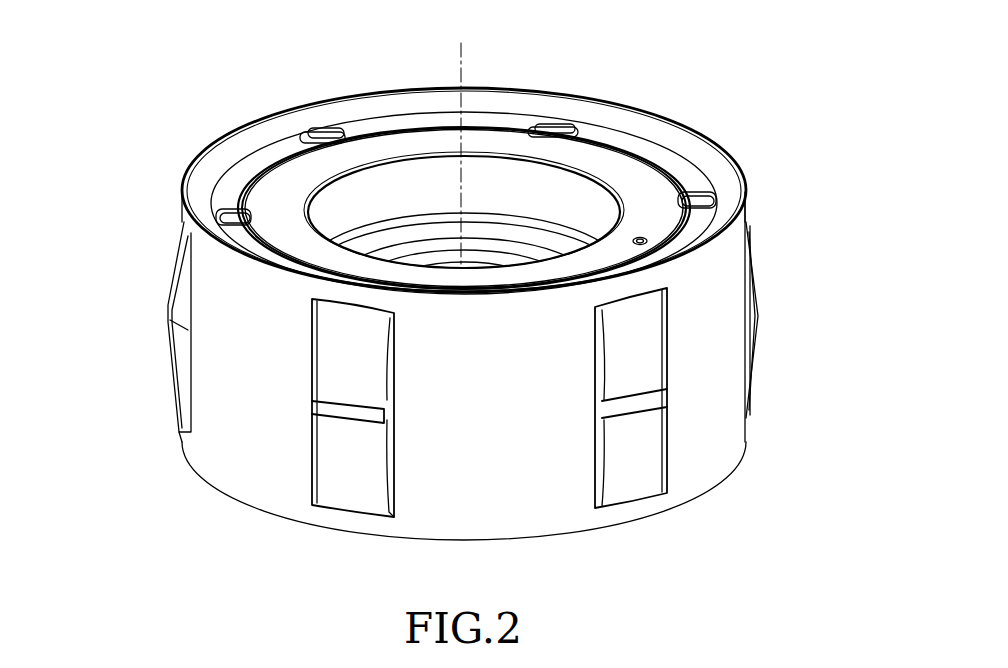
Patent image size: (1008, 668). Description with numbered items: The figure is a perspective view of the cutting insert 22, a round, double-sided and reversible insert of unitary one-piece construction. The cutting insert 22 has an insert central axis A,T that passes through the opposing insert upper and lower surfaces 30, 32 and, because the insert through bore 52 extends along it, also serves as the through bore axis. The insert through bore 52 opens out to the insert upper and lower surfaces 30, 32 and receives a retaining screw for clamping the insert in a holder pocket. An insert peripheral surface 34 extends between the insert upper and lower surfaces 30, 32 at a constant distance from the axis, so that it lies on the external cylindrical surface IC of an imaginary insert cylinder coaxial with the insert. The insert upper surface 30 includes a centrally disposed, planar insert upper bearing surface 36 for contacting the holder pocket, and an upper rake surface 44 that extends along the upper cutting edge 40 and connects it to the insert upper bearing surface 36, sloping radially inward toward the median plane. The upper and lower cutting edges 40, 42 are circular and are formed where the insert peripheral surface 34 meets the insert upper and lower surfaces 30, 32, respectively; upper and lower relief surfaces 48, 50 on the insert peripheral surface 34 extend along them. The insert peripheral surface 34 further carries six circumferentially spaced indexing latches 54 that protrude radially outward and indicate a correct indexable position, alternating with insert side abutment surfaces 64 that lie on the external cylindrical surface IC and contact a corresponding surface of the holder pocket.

The cutting insert 22 is at (752, 80).
The insert upper surface 30 is at (292, 165).
The insert lower surface 32 is at (257, 519).
The insert peripheral surface 34 is at (717, 428).
The insert upper bearing surface 36 is at (605, 166).
The upper cutting edge 40 is at (745, 160).
The lower cutting edge 42 is at (723, 477).
The upper rake surface 44 is at (565, 108).
The upper relief surface 48 is at (221, 310).
The lower relief surface 50 is at (228, 473).
The insert through bore 52 is at (418, 168).
The indexing latches 54 is at (165, 297).
The insert side abutment surfaces 64 is at (720, 375).
The external cylindrical surface IC is at (547, 478).
The insert central axis and through bore axis A,T is at (461, 70).